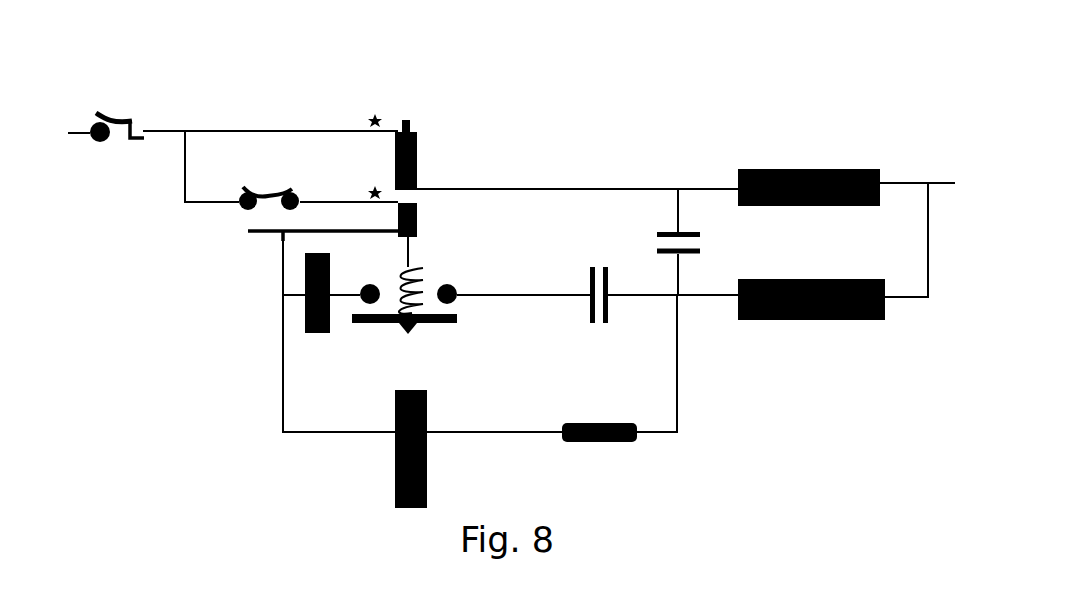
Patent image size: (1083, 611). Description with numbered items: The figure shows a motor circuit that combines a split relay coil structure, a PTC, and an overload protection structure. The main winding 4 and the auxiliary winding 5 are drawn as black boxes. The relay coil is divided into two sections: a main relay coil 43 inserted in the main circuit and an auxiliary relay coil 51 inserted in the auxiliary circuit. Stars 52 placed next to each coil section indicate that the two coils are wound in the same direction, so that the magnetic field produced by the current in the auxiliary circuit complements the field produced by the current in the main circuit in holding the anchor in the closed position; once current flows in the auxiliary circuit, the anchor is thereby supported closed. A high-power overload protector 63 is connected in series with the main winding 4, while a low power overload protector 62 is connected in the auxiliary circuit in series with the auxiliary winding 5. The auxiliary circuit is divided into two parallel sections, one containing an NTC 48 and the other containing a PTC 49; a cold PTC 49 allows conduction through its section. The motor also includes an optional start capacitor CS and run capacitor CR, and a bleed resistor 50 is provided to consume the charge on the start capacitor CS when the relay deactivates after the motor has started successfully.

The main winding 4 is at (783, 169).
The auxiliary winding 5 is at (780, 279).
The main relay coil 43 is at (418, 148).
The NTC 48 is at (322, 335).
The PTC 49 is at (395, 508).
The bleed resistor 50 is at (598, 442).
The auxiliary relay coil 51 is at (420, 223).
The stars 52 is at (365, 113).
The low power overload protector 62 is at (130, 110).
The high-power overload protector 63 is at (272, 203).
The run capacitor CR is at (660, 229).
The start capacitor CS is at (614, 312).